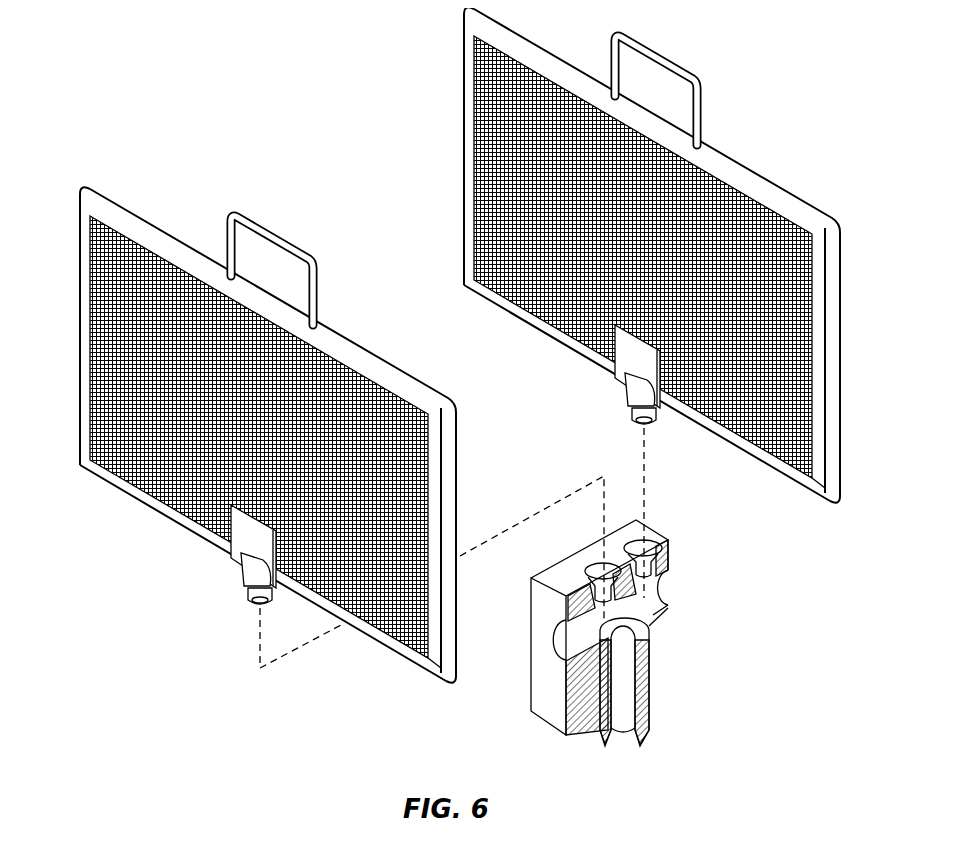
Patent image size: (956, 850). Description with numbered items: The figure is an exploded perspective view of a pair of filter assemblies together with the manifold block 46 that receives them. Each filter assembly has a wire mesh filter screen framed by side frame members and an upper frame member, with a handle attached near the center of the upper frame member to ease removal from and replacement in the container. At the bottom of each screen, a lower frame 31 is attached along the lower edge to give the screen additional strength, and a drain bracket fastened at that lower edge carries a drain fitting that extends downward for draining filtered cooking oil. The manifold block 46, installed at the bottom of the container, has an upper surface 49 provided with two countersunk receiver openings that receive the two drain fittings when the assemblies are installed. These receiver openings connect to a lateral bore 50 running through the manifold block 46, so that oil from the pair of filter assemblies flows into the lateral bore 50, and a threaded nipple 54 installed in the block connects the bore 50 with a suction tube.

The lower frame 31 is at (128, 498).
The manifold block 46 is at (543, 707).
The upper surface 49 is at (547, 573).
The lateral bore 50 is at (550, 627).
The threaded nipple 54 is at (642, 680).